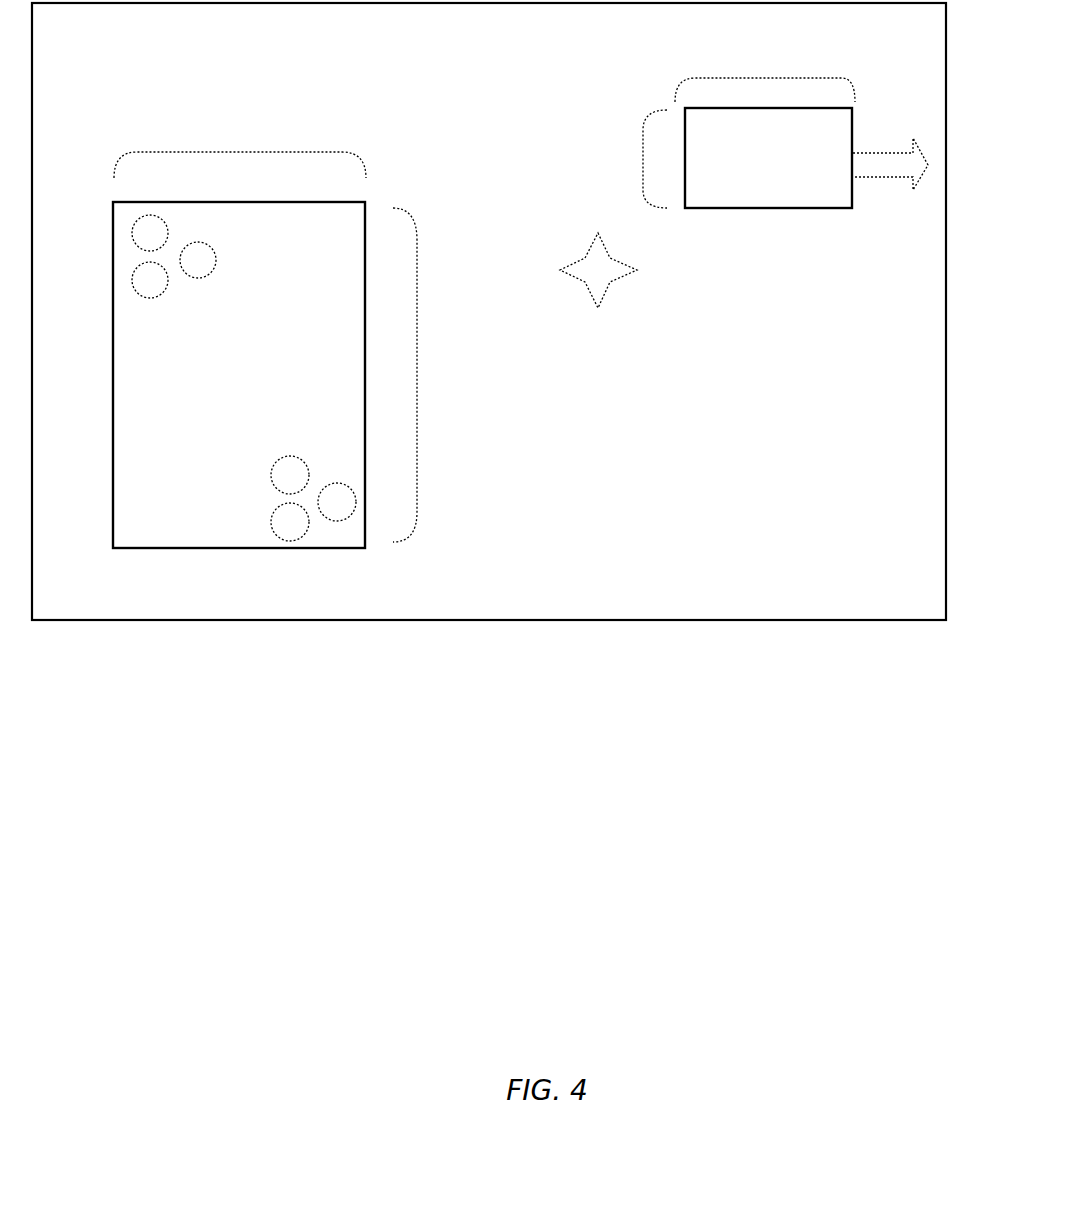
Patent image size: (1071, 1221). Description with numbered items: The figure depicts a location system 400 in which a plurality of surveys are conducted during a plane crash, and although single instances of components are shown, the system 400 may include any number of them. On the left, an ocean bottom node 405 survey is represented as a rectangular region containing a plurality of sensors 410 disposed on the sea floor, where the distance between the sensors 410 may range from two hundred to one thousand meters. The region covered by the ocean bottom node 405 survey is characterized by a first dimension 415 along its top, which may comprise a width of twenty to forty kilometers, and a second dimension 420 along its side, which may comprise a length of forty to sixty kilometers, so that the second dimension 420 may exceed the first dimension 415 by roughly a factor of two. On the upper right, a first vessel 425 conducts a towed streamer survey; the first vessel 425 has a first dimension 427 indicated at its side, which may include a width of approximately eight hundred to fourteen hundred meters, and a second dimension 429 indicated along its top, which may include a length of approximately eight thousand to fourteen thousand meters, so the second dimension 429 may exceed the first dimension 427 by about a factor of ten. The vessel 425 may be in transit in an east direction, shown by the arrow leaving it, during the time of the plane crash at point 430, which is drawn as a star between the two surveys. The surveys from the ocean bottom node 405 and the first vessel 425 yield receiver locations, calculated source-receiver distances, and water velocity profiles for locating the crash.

The system 400 is at (489, 518).
The ocean bottom node 405 is at (239, 375).
The sensors 410 is at (244, 378).
The first dimension 415 is at (243, 152).
The second dimension 420 is at (417, 380).
The first vessel 425 is at (768, 158).
The first dimension 427 is at (643, 157).
The second dimension 429 is at (768, 78).
The point 430 is at (598, 293).